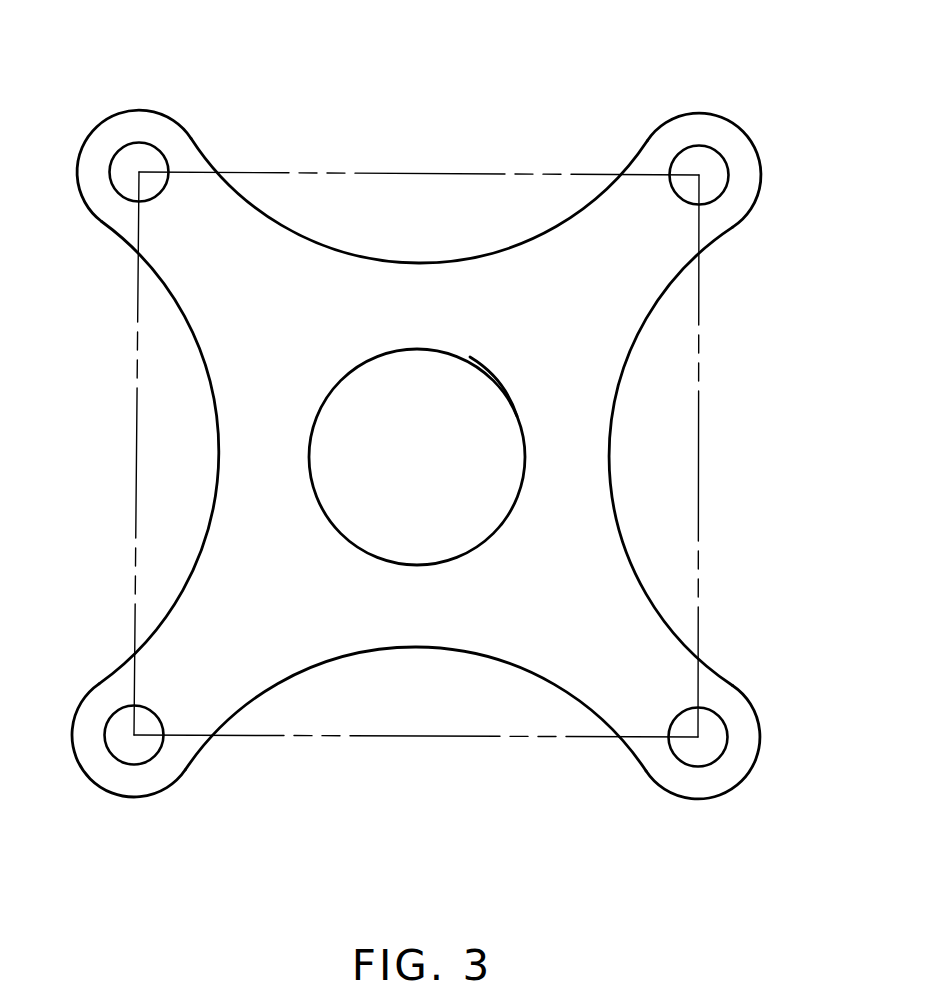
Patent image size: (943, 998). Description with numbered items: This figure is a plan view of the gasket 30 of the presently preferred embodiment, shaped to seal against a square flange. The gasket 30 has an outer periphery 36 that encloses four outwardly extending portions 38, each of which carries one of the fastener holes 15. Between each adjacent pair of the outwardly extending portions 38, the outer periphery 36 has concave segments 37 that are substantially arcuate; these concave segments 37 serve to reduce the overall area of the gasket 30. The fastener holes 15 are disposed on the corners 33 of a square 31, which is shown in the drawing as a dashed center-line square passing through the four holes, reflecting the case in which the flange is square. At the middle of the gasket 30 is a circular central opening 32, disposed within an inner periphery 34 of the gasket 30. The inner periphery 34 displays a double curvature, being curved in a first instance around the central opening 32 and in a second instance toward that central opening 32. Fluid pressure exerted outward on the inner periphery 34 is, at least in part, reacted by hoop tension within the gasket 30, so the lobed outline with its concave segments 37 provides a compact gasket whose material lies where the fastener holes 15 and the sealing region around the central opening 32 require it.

The gasket 30 is at (454, 436).
The square 31 is at (700, 436).
The central opening 32 is at (401, 448).
The corners 33 is at (139, 172).
The fastener holes 15 is at (697, 160).
The inner periphery 34 is at (500, 387).
The outer periphery 36 is at (735, 227).
The concave segments 37 is at (420, 262).
The outwardly extending portions 38 is at (166, 233).